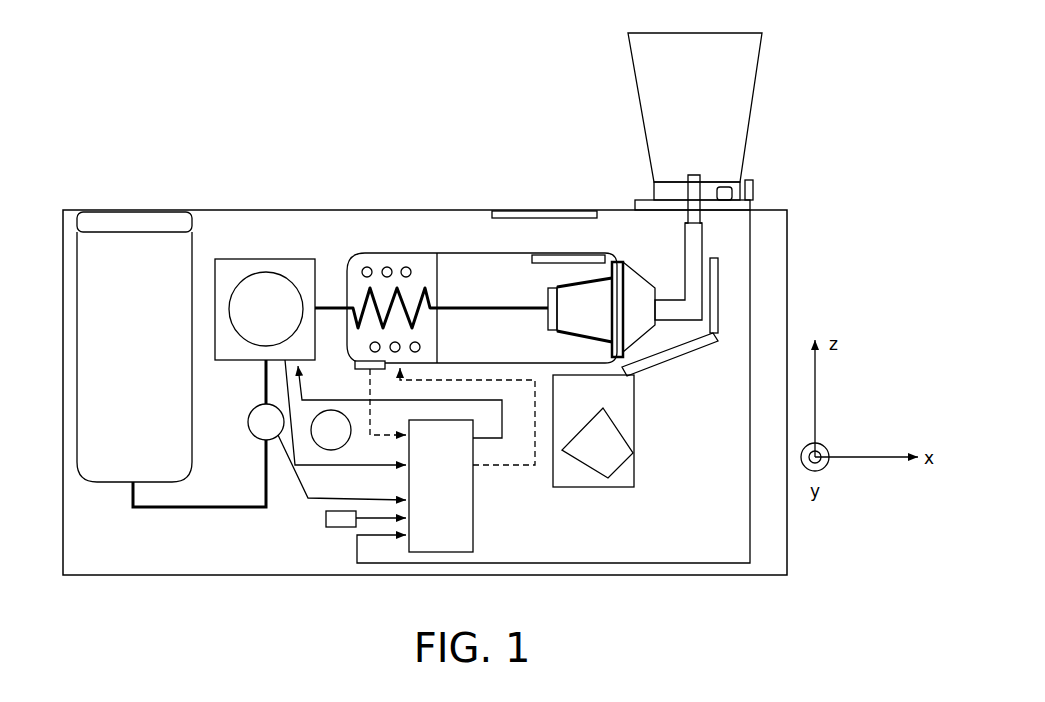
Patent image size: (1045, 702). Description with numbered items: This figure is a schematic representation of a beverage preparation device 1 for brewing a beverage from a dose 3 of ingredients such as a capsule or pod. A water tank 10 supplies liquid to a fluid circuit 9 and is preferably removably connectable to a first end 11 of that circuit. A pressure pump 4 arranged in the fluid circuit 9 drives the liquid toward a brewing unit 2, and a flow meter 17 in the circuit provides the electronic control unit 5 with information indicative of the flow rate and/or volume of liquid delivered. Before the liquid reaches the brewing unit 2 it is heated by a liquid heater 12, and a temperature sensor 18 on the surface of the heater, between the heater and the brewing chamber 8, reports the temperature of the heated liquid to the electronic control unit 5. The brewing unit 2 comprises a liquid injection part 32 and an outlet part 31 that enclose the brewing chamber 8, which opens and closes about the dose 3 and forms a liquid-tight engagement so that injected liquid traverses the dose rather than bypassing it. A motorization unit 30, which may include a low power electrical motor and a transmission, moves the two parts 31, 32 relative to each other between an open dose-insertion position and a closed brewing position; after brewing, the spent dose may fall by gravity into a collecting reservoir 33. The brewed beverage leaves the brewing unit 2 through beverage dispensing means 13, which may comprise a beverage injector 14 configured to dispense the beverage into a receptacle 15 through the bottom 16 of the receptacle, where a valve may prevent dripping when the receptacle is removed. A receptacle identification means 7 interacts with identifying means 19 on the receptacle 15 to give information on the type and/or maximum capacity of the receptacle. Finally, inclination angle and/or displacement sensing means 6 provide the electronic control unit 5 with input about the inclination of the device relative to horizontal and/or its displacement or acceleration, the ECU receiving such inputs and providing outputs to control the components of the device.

The beverage device 1 is at (394, 161).
The brewing unit 2 is at (431, 251).
The dose 3 is at (600, 278).
The pressure pump 4 is at (266, 259).
The electronic control unit 5 is at (473, 520).
The inclination angle and/or displacement sensing means 6 is at (326, 520).
The receptacle identification means 7 is at (755, 190).
The brewing chamber 8 is at (547, 300).
The fluid circuit 9 is at (172, 550).
The water tank 10 is at (95, 362).
The first end 11 is at (133, 497).
The liquid heater 12 is at (380, 253).
The beverage dispensing means 13 is at (728, 296).
The beverage injector 14 is at (692, 175).
The receptacle 15 is at (758, 65).
The bottom of the receptacle 16 is at (663, 192).
The flow meter 17 is at (252, 435).
The temperature sensor 18 is at (355, 365).
The identifying means 19 is at (725, 187).
The motorization unit 30 is at (321, 441).
The outlet part 31 is at (651, 282).
The liquid injection part 32 is at (480, 266).
The collecting reservoir 33 is at (634, 425).